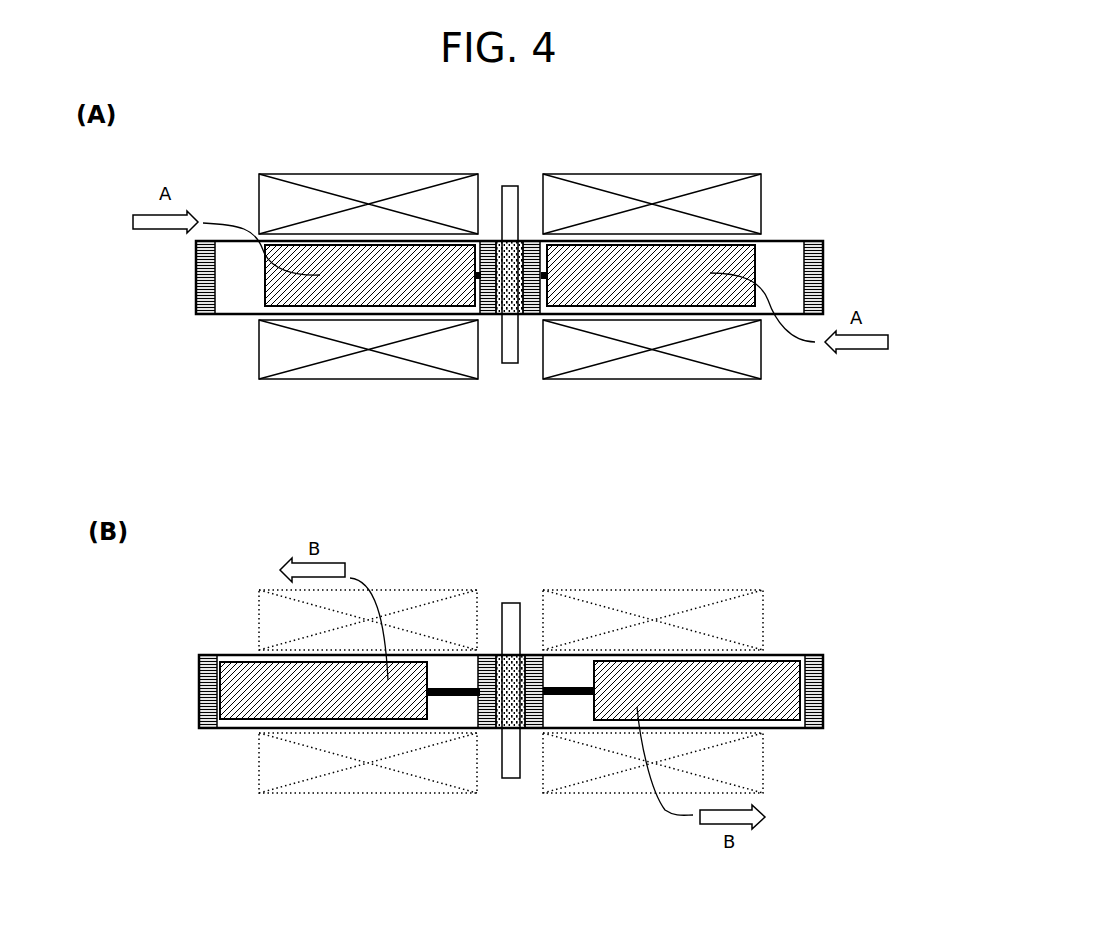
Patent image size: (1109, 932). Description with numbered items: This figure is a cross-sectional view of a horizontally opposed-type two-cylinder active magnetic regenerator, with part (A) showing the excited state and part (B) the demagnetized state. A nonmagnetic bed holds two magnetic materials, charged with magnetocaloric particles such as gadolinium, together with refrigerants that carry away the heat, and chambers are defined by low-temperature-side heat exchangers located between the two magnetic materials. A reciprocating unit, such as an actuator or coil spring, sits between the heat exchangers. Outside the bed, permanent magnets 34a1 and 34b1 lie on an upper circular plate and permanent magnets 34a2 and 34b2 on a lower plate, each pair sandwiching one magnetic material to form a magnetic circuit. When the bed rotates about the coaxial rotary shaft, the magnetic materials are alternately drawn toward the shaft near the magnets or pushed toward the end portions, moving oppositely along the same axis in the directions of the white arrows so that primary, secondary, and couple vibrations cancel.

The permanent magnet 34a1 is at (323, 174).
The permanent magnet 34a2 is at (322, 380).
The permanent magnet 34b1 is at (692, 175).
The permanent magnet 34b2 is at (692, 380).